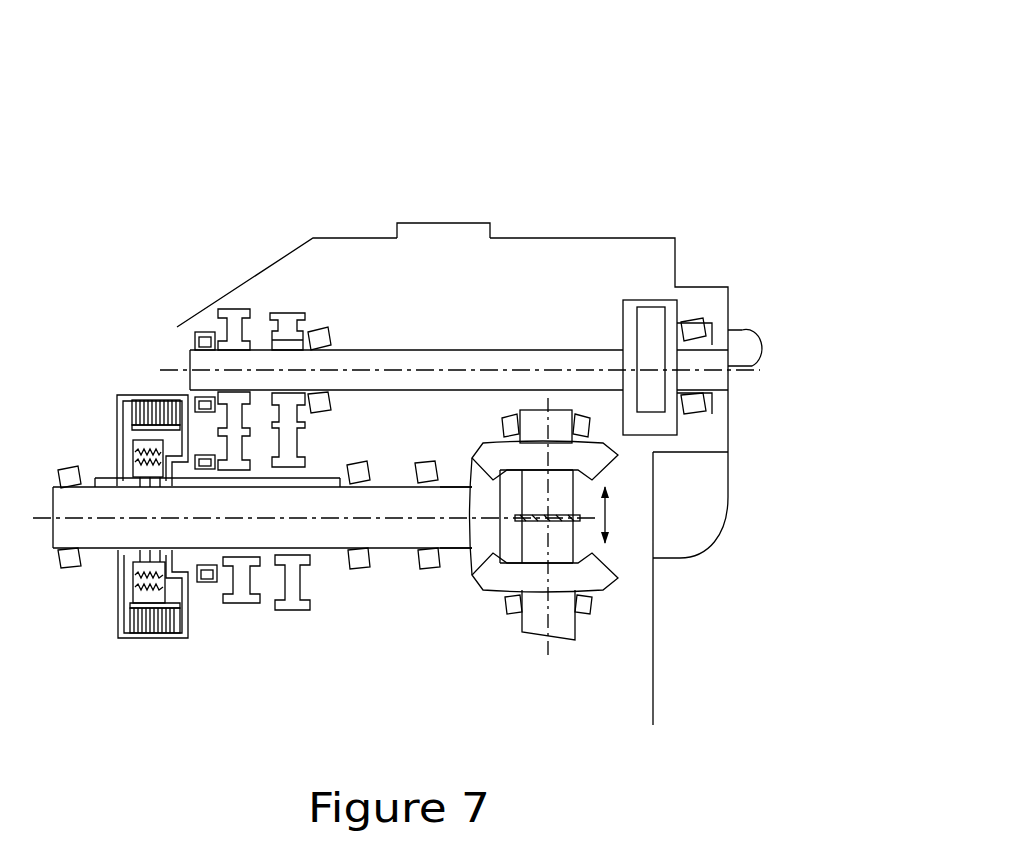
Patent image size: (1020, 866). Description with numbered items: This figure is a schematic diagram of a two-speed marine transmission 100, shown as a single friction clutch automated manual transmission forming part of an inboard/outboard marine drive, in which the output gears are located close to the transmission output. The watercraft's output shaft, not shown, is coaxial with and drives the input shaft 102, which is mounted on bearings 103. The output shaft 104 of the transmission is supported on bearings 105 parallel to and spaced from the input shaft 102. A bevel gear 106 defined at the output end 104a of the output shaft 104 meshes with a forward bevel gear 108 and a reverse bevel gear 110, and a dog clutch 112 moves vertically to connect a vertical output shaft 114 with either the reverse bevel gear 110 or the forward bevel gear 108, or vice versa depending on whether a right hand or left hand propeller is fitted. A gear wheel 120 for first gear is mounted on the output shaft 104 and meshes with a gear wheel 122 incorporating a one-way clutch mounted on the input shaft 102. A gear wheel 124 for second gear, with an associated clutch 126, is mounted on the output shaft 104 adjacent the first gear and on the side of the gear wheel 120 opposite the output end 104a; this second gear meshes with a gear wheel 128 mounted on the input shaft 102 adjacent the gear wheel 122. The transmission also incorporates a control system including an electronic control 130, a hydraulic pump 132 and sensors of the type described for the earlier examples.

The drive assembly 100 is at (395, 127).
The input shaft 102 is at (522, 347).
The bearings 103 is at (320, 330).
The output shaft 104 is at (388, 552).
The output end 104a is at (468, 522).
The bearings 105 is at (362, 467).
The bevel gear 106 is at (675, 585).
The forward bevel gear 108 is at (613, 463).
The reverse bevel gear 110 is at (615, 565).
The dog clutch 112 is at (593, 515).
The vertical output shaft 114 is at (570, 625).
The gear wheel 120 is at (292, 610).
The gear wheel 122 is at (287, 338).
The gear wheel 124 is at (238, 607).
The clutch 126 is at (145, 400).
The gear wheel 128 is at (210, 305).
The electronic control 130 is at (448, 220).
The hydraulic pump 132 is at (653, 297).